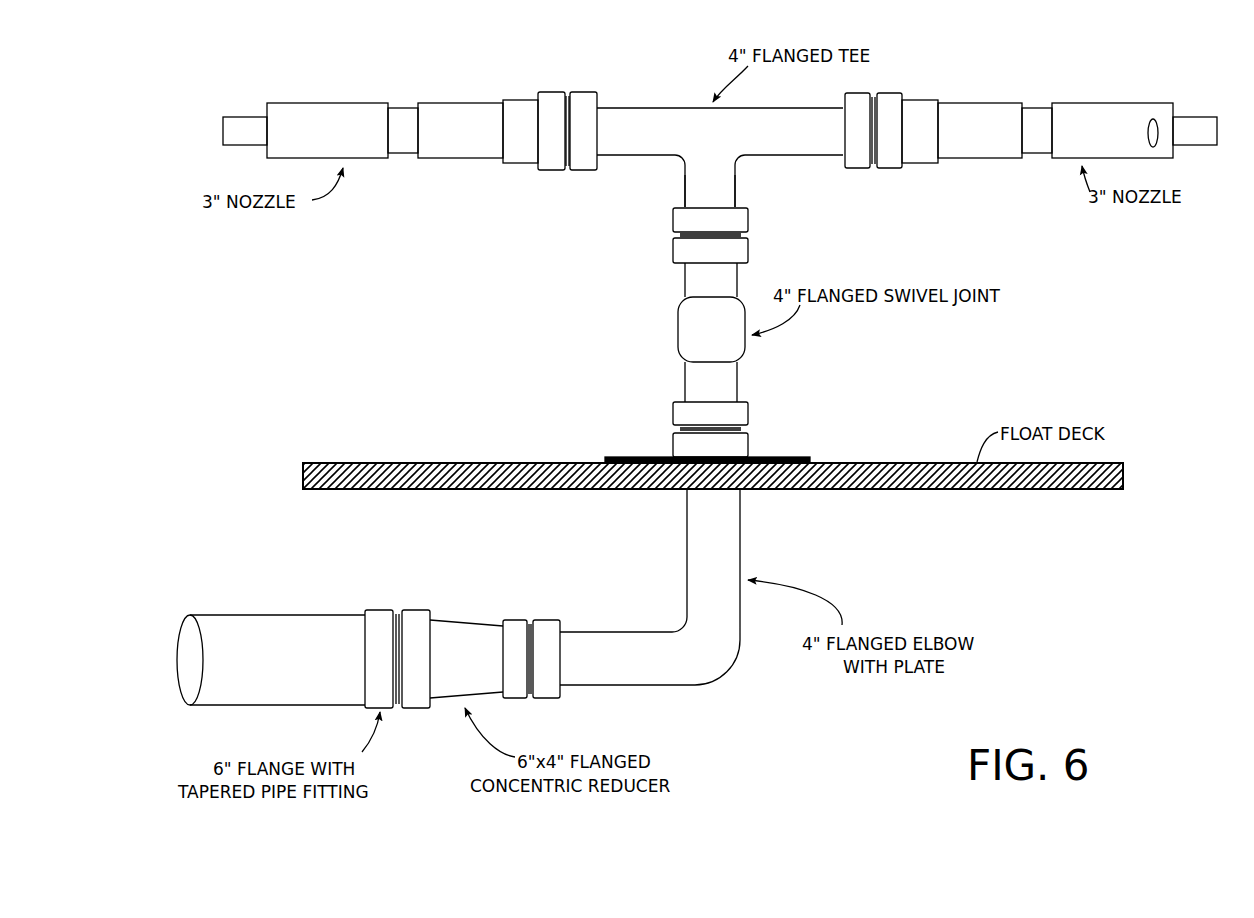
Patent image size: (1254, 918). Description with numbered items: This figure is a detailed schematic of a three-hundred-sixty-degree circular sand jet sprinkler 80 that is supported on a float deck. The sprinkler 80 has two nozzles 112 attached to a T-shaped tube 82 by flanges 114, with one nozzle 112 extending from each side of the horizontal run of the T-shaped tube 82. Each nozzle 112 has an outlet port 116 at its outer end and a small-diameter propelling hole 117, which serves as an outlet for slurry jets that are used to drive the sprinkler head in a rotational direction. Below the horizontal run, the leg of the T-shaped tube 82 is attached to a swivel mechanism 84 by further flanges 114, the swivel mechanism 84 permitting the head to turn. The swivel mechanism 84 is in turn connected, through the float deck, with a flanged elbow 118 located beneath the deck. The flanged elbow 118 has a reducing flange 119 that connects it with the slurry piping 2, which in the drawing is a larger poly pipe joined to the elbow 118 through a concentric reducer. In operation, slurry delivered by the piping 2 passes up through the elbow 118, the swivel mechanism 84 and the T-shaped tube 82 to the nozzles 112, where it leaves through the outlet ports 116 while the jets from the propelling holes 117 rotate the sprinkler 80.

The 6 inch poly pipe 2 is at (272, 615).
The circular sand jet sprinkler 80 is at (648, 108).
The T-shaped tube 82 is at (676, 157).
The swivel mechanism 84 is at (678, 313).
The nozzle 112 is at (318, 103).
The flanges 114 is at (578, 92).
The outlet port 116 is at (222, 130).
The propelling hole 117 is at (1153, 118).
The flanged elbow 118 is at (725, 668).
The reducing flange 119 is at (453, 620).